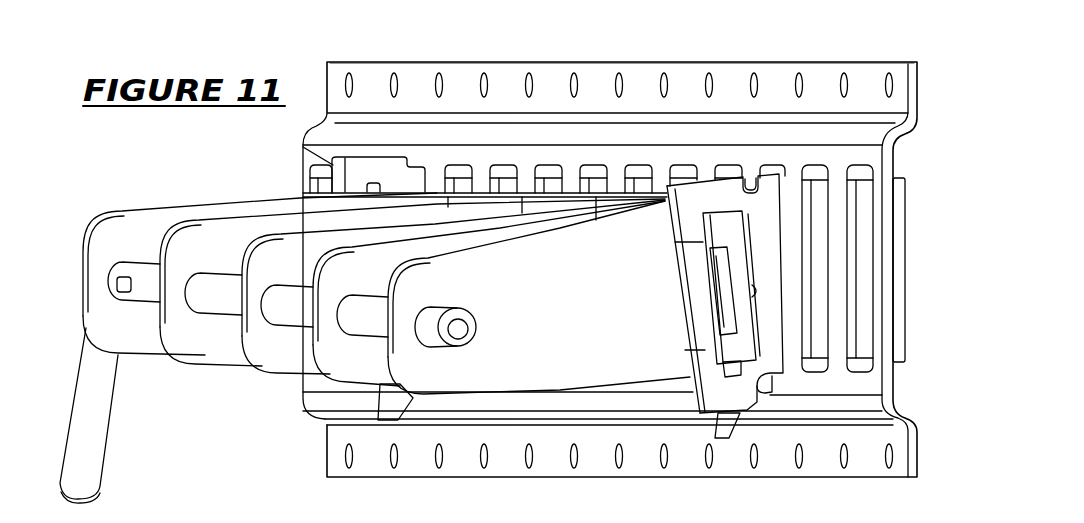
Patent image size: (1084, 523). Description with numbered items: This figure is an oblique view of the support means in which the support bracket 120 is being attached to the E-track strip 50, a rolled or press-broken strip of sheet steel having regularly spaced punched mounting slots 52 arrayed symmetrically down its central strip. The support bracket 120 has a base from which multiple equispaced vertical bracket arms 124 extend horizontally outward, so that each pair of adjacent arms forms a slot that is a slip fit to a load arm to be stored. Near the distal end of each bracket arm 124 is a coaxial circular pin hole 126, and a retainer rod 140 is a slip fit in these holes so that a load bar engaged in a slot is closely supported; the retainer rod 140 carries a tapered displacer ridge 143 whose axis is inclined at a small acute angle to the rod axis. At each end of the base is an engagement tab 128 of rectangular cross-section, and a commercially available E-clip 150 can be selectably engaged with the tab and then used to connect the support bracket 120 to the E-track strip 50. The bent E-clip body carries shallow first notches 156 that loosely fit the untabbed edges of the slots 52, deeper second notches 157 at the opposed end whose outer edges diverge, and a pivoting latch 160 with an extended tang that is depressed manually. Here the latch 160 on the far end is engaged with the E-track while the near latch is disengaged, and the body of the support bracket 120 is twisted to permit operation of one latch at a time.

The E-track strip 50 is at (610, 285).
The mounting slots 52 is at (622, 98).
The support bracket 120 is at (421, 322).
The bracket arms 124 is at (260, 263).
The pin hole 126 is at (400, 261).
The engagement tab 128 is at (676, 377).
The retainer rod 140 is at (136, 415).
The displacer ridge 143 is at (180, 342).
The E-clip 150 is at (503, 236).
The first notches 156 is at (673, 103).
The second notches 157 is at (815, 439).
The latch 160 is at (743, 438).